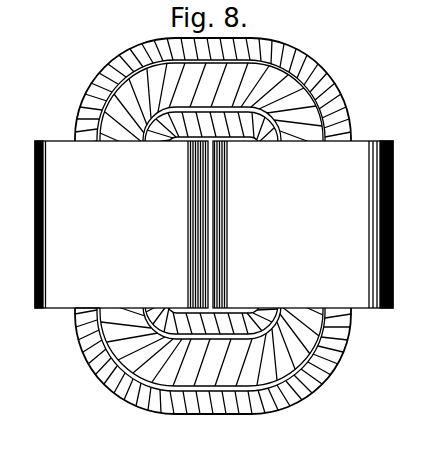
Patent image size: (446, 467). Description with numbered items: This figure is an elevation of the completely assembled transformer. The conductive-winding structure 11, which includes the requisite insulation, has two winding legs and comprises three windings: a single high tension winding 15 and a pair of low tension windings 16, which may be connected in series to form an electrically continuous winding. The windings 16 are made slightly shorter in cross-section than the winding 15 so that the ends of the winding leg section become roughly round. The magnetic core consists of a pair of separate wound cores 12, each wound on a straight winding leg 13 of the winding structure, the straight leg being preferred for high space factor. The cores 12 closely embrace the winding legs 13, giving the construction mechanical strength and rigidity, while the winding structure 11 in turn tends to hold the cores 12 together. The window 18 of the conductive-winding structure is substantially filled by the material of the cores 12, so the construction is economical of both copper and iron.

The conductive-winding structure 11 is at (213, 239).
The wound core 12 is at (45, 217).
The winding leg 13 is at (78, 310).
The high tension winding 15 is at (231, 377).
The low tension winding 16 is at (212, 330).
The window of the conductive-winding structure 18 is at (213, 226).